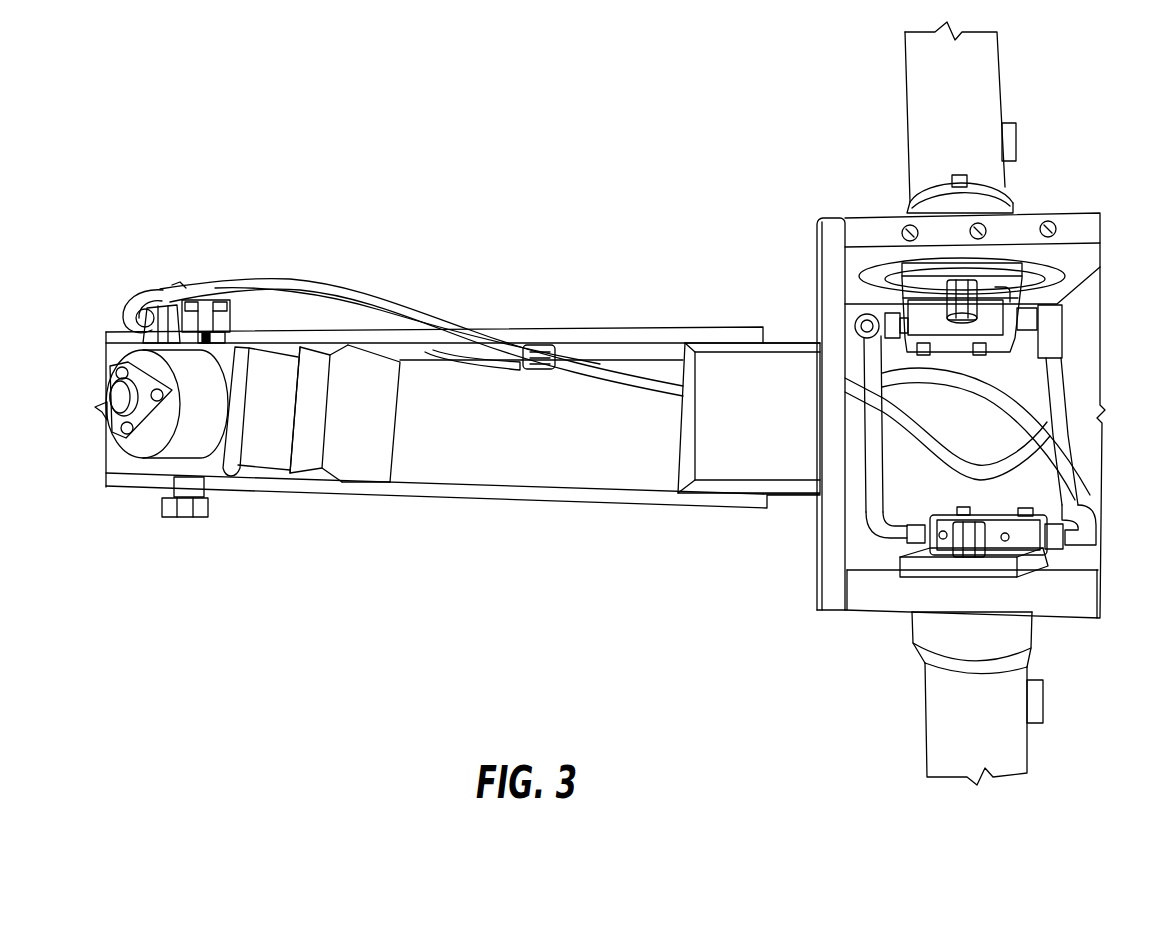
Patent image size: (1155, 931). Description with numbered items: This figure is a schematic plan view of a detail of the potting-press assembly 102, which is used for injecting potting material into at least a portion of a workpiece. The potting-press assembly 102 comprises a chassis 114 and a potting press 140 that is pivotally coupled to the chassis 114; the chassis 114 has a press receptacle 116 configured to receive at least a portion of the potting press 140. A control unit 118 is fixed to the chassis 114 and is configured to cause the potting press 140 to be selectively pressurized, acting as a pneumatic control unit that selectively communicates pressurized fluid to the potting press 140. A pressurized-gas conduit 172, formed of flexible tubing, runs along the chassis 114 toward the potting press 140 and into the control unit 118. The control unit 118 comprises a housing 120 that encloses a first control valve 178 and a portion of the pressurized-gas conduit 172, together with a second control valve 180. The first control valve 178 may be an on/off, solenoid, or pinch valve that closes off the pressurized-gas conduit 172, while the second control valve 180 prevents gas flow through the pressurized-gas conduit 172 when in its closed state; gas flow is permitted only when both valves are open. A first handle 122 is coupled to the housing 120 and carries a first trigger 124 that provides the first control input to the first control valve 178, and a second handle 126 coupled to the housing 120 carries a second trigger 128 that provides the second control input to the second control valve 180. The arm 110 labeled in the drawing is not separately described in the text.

The potting-press assembly 102 is at (523, 198).
The arm 110 is at (537, 326).
The chassis 114 is at (422, 491).
The press receptacle 116 is at (275, 467).
The control unit 118 is at (832, 202).
The housing 120 is at (832, 251).
The first handle 122 is at (924, 100).
The first trigger 124 is at (1016, 144).
The second handle 126 is at (950, 708).
The second trigger 128 is at (1045, 702).
The potting press 140 is at (164, 266).
The pressurized-gas conduit 172 is at (458, 332).
The first control valve 178 is at (950, 333).
The second control valve 180 is at (960, 534).